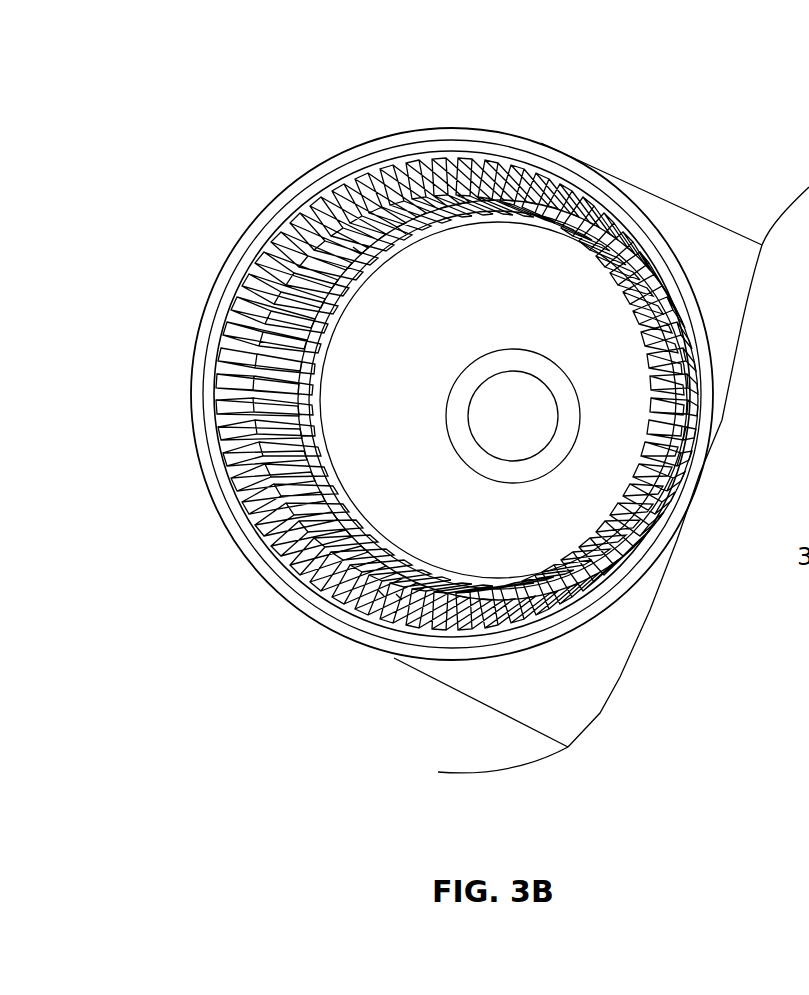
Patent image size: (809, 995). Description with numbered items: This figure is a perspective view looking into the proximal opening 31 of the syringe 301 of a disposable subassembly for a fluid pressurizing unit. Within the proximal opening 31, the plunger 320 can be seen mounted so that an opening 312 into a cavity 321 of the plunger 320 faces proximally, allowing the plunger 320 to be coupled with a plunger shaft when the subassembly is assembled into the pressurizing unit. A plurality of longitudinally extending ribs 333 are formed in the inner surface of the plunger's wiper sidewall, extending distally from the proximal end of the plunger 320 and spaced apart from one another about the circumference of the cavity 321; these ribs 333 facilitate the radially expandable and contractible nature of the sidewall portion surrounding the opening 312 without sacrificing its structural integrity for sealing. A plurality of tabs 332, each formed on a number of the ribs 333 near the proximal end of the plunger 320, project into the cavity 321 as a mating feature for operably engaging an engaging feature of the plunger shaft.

The syringe 301 is at (716, 212).
The proximal opening 31 is at (222, 482).
The plunger 320 is at (293, 202).
The cavity 321 is at (503, 262).
The opening 312 is at (555, 253).
The tabs 332 is at (405, 215).
The longitudinally extending ribs 333 is at (320, 313).